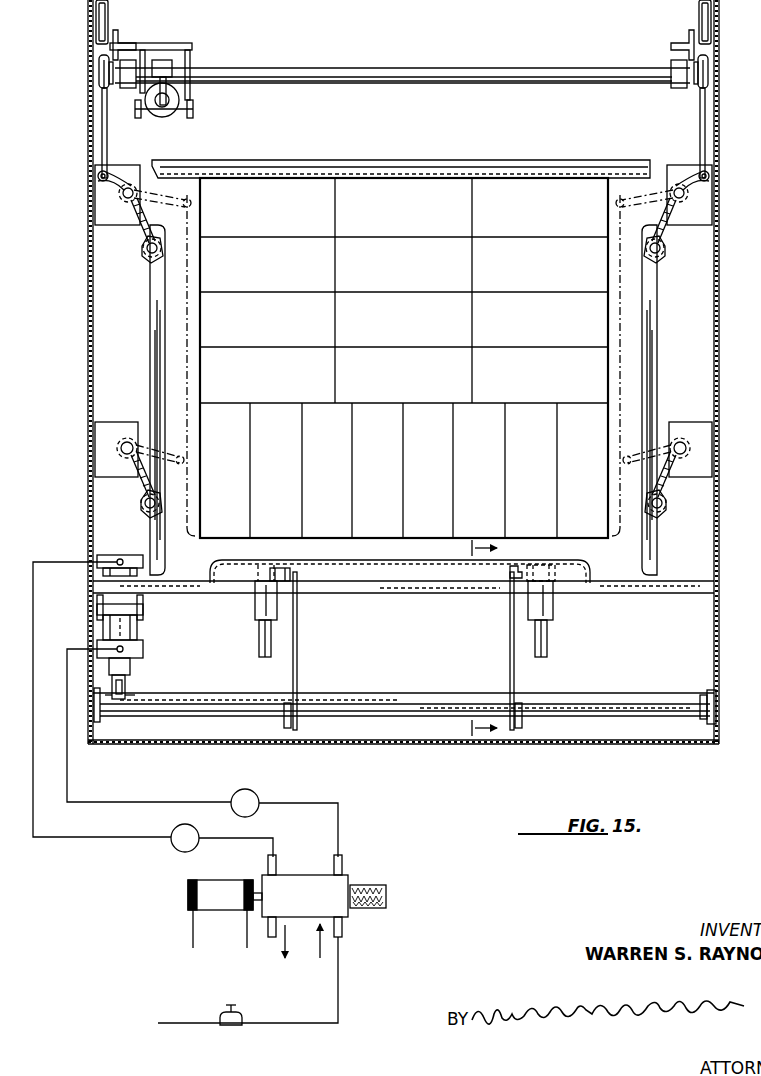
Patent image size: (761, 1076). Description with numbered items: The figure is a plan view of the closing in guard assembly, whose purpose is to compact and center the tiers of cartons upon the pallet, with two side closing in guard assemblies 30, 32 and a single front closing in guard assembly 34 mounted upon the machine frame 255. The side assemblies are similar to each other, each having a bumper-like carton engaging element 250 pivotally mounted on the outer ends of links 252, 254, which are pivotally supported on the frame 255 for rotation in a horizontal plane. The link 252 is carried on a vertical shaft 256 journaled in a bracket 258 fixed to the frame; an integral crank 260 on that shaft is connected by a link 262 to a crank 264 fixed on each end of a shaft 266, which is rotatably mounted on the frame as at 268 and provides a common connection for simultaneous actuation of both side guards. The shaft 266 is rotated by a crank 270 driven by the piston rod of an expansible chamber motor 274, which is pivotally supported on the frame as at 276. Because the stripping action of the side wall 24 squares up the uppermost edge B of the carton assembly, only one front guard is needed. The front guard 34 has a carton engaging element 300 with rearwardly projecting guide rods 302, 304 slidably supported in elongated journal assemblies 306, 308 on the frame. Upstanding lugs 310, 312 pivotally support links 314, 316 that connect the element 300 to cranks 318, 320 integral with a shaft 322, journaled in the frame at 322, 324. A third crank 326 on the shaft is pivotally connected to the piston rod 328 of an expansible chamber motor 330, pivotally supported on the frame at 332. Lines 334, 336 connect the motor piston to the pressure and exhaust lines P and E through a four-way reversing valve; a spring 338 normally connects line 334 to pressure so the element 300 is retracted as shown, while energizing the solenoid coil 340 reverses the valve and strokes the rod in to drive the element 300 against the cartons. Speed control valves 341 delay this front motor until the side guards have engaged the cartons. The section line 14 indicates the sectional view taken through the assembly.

The section line 14- 14 is at (470, 637).
The side wall 24 is at (270, 165).
The side closing in guard assembly 30 is at (148, 340).
The side closing in guard assembly 32 is at (661, 324).
The front closing in guard assembly 34 is at (386, 586).
The edge of the carton assembly B is at (376, 185).
The carton engaging element 250 is at (162, 338).
The link 252 is at (143, 225).
The link 254 is at (140, 483).
The machine frame 255 is at (90, 288).
The vertical shaft 256 is at (130, 187).
The bracket 258 is at (108, 212).
The crank 260 is at (97, 178).
The link 262 is at (104, 116).
The crank 264 is at (98, 78).
The shaft 266 is at (377, 68).
The shaft mounting 268 is at (142, 58).
The crank 270 is at (173, 78).
The expansible chamber motor 274 is at (168, 120).
The pivotal support 276 is at (192, 99).
The carton engaging element 300 is at (368, 558).
The guide rod 302 is at (260, 645).
The guide rod 304 is at (550, 648).
The elongated journal assembly 306 is at (256, 612).
The elongated journal assembly 308 is at (556, 612).
The upstanding lug 310 is at (283, 568).
The upstanding lug 312 is at (522, 567).
The link 314 is at (300, 668).
The link 316 is at (511, 660).
The crank 318 is at (285, 717).
The crank 320 is at (518, 715).
The shaft 322 is at (425, 695).
The journal 324 is at (716, 718).
The third crank 326 is at (125, 706).
The piston rod 328 is at (130, 676).
The expansible chamber motor 330 is at (138, 635).
The pivotal support 332 is at (143, 609).
The line 334 is at (166, 804).
The line 336 is at (151, 838).
The spring 338 is at (372, 884).
The solenoid coil 340 is at (245, 872).
The speed control valve 341 is at (240, 810).
The exhaust line E is at (305, 907).
The pressure line P is at (256, 974).